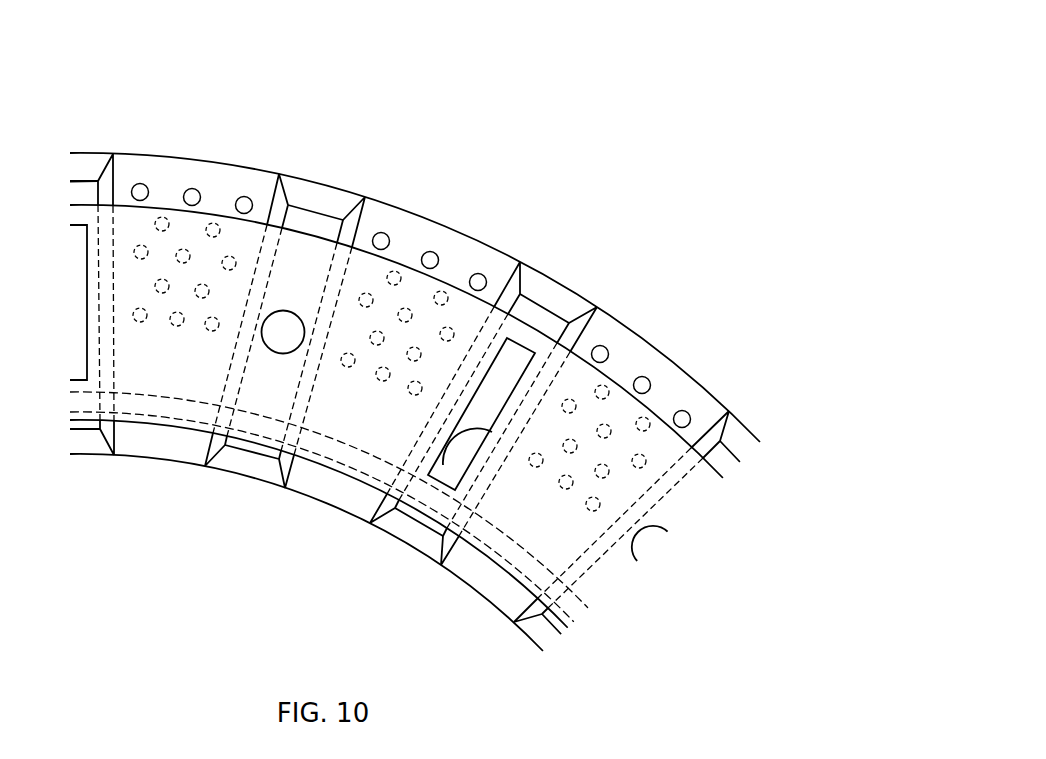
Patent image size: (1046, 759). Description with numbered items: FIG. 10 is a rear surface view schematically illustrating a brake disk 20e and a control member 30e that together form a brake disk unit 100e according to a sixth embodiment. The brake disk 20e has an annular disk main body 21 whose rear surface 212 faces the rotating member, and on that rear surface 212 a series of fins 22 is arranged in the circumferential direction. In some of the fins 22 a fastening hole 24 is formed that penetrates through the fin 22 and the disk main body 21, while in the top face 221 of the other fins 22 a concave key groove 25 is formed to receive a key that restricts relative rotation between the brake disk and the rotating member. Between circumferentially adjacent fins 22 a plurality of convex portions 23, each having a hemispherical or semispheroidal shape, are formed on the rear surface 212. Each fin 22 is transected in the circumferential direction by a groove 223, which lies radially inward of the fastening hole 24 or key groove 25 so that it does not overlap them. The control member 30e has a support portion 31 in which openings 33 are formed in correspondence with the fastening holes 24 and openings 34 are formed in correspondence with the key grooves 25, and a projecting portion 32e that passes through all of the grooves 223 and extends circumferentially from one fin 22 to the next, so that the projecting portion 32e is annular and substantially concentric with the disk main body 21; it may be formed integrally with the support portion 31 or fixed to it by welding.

The brake disk unit 100e is at (666, 79).
The brake disk 20e is at (652, 314).
The disk main body 21 is at (452, 225).
The rear surface 212 is at (466, 261).
The fin 22 is at (329, 183).
The top face 221 is at (307, 217).
The groove 223 is at (239, 482).
The convex portion 23 is at (381, 231).
The fastening hole 24 is at (279, 320).
The key groove 25 is at (487, 409).
The control member 30e is at (87, 190).
The support portion 31 is at (160, 205).
The projecting portion 32e is at (315, 492).
The opening 33 is at (302, 337).
The opening 34 is at (428, 478).